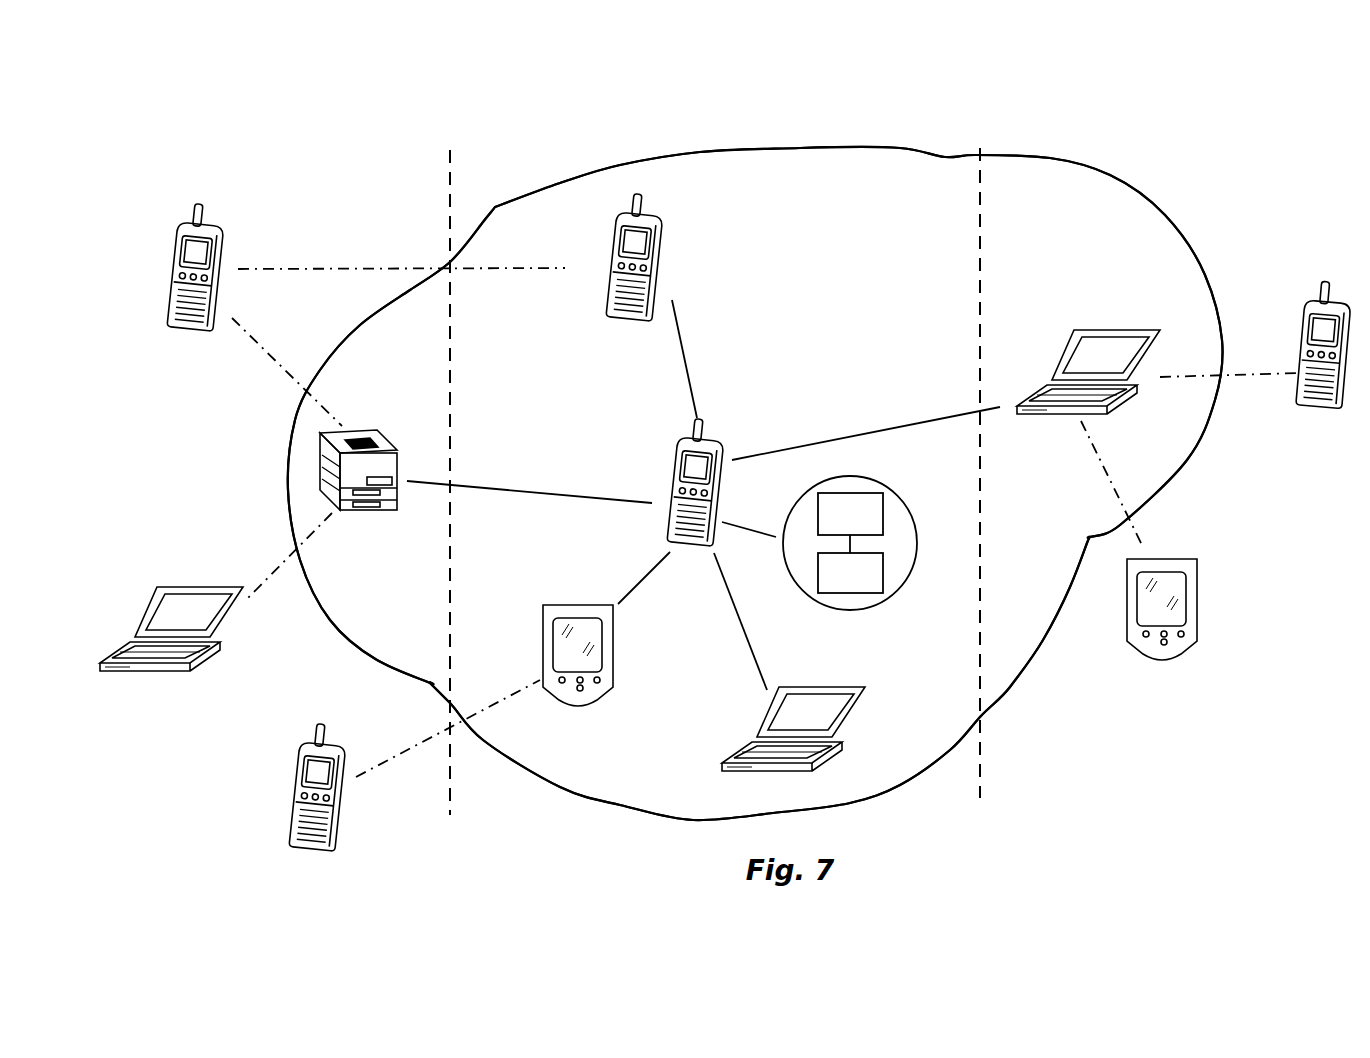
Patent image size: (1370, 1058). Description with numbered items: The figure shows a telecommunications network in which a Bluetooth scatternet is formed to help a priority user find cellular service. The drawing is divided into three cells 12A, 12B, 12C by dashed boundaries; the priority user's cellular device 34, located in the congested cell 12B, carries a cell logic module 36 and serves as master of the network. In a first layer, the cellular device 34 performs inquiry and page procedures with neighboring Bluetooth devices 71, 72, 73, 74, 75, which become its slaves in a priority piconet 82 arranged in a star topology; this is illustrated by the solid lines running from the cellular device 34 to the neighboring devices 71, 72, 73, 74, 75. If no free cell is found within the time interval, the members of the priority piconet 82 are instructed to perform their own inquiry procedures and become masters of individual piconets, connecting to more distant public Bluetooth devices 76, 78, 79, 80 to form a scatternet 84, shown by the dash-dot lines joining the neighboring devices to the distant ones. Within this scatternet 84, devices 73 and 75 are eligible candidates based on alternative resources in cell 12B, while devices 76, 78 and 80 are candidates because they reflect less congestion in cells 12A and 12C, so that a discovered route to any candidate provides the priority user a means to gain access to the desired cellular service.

The cell 12A is at (398, 852).
The cell 12B is at (600, 855).
The cell 12C is at (1009, 849).
The cellular device 34 is at (674, 462).
The cell logic module 36 is at (839, 525).
The neighboring Bluetooth device 71 is at (1118, 330).
The neighboring Bluetooth device 72 is at (855, 688).
The neighboring Bluetooth device 73 is at (594, 706).
The neighboring Bluetooth device 74 is at (350, 512).
The neighboring Bluetooth device 75 is at (614, 246).
The public Bluetooth device 76 is at (1308, 320).
The public Bluetooth device 78 is at (300, 782).
The public Bluetooth device 79 is at (190, 588).
The public Bluetooth device 80 is at (170, 264).
The priority piconet 82 is at (1005, 716).
The scatternet 84 is at (1102, 157).